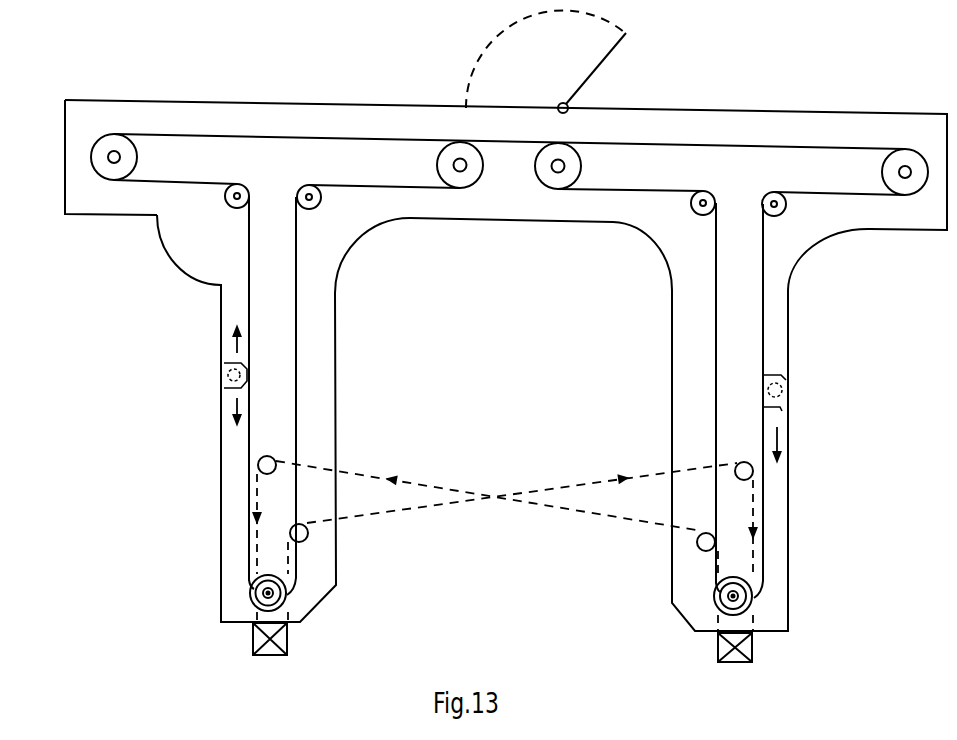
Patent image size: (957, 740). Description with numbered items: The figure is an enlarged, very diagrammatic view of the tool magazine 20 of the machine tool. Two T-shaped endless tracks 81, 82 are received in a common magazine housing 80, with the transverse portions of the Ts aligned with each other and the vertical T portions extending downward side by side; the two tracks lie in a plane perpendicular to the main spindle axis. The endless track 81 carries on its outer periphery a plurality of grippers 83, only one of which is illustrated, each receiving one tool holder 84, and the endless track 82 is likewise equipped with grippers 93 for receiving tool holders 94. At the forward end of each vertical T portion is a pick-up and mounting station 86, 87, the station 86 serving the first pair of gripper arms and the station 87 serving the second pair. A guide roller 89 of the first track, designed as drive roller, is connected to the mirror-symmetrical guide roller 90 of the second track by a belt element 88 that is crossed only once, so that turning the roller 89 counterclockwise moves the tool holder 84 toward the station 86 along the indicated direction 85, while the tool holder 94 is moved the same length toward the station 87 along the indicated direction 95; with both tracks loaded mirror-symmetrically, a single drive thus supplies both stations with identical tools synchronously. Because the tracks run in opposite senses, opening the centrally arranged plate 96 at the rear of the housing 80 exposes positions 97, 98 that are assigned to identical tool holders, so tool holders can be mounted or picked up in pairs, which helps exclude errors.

The magazine 20 is at (506, 349).
The magazine housing 80 is at (299, 107).
The endless track 81 is at (245, 269).
The endless track 82 is at (763, 340).
The gripper 83 is at (229, 390).
The tool holder 84 is at (229, 376).
The direction arrows 85 is at (242, 398).
The pick-up and mounting station 86 is at (282, 641).
The pick-up and mounting station 87 is at (748, 649).
The belt element 88 is at (506, 481).
The guide roller 89 is at (250, 603).
The guide roller 90 is at (760, 588).
The gripper 93 is at (782, 411).
The tool holder 94 is at (781, 388).
The right direction arrow 95 is at (783, 435).
The plate 96 is at (608, 64).
The position 97 is at (483, 138).
The position 98 is at (538, 138).